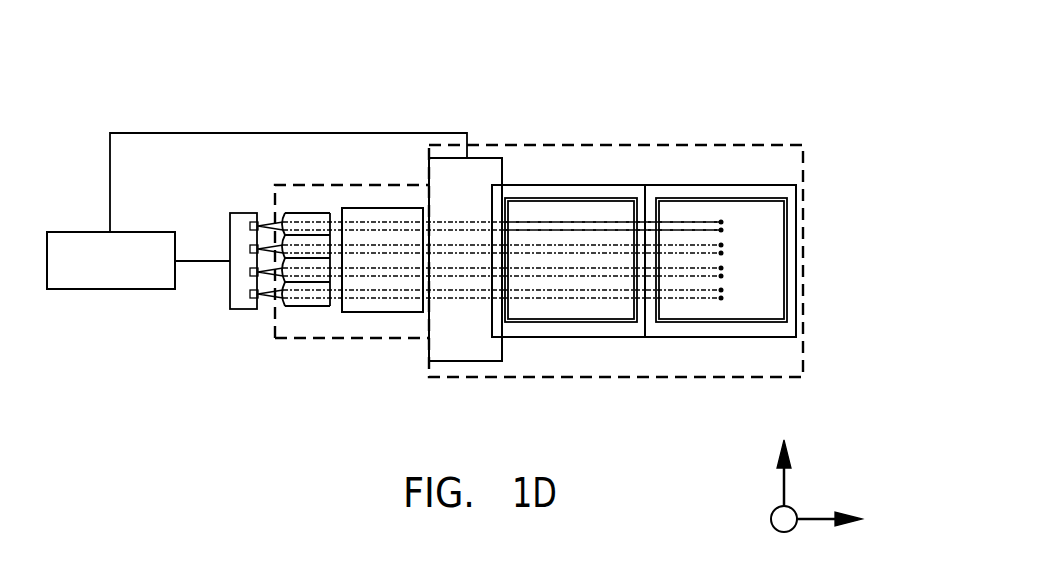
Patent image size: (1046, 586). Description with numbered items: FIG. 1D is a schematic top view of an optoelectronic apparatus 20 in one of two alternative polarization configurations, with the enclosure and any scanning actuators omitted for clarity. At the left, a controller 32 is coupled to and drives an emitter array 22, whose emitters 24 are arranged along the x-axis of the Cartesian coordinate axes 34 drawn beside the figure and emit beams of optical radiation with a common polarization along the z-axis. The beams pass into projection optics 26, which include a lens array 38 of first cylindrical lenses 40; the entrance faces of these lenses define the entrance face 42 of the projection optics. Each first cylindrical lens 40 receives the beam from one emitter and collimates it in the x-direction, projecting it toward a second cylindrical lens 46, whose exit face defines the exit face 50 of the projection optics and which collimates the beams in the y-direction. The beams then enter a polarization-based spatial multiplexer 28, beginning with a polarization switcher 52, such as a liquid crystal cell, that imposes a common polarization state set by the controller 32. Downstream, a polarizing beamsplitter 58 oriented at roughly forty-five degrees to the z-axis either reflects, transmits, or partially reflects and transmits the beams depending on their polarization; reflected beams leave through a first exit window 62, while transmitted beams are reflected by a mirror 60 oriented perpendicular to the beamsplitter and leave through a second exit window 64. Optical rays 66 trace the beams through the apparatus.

The optoelectronic apparatus 20 is at (170, 100).
The emitter array 22 is at (236, 285).
The emitters 24 is at (248, 246).
The projection optics 26 is at (330, 340).
The polarization-based spatial multiplexer 28 is at (472, 379).
The controller 32 is at (73, 290).
The Cartesian coordinate axes 34 is at (820, 524).
The lens array 38 is at (300, 308).
The first cylindrical lenses 40 is at (306, 238).
The entrance face 42 is at (283, 225).
The second cylindrical lens 46 is at (368, 313).
The exit face 50 is at (428, 240).
The polarization switcher 52 is at (481, 165).
The polarizing beamsplitter 58 is at (603, 208).
The mirror 60 is at (700, 232).
The first exit window 62 is at (576, 339).
The second exit window 64 is at (736, 339).
The optical rays 66 is at (533, 250).